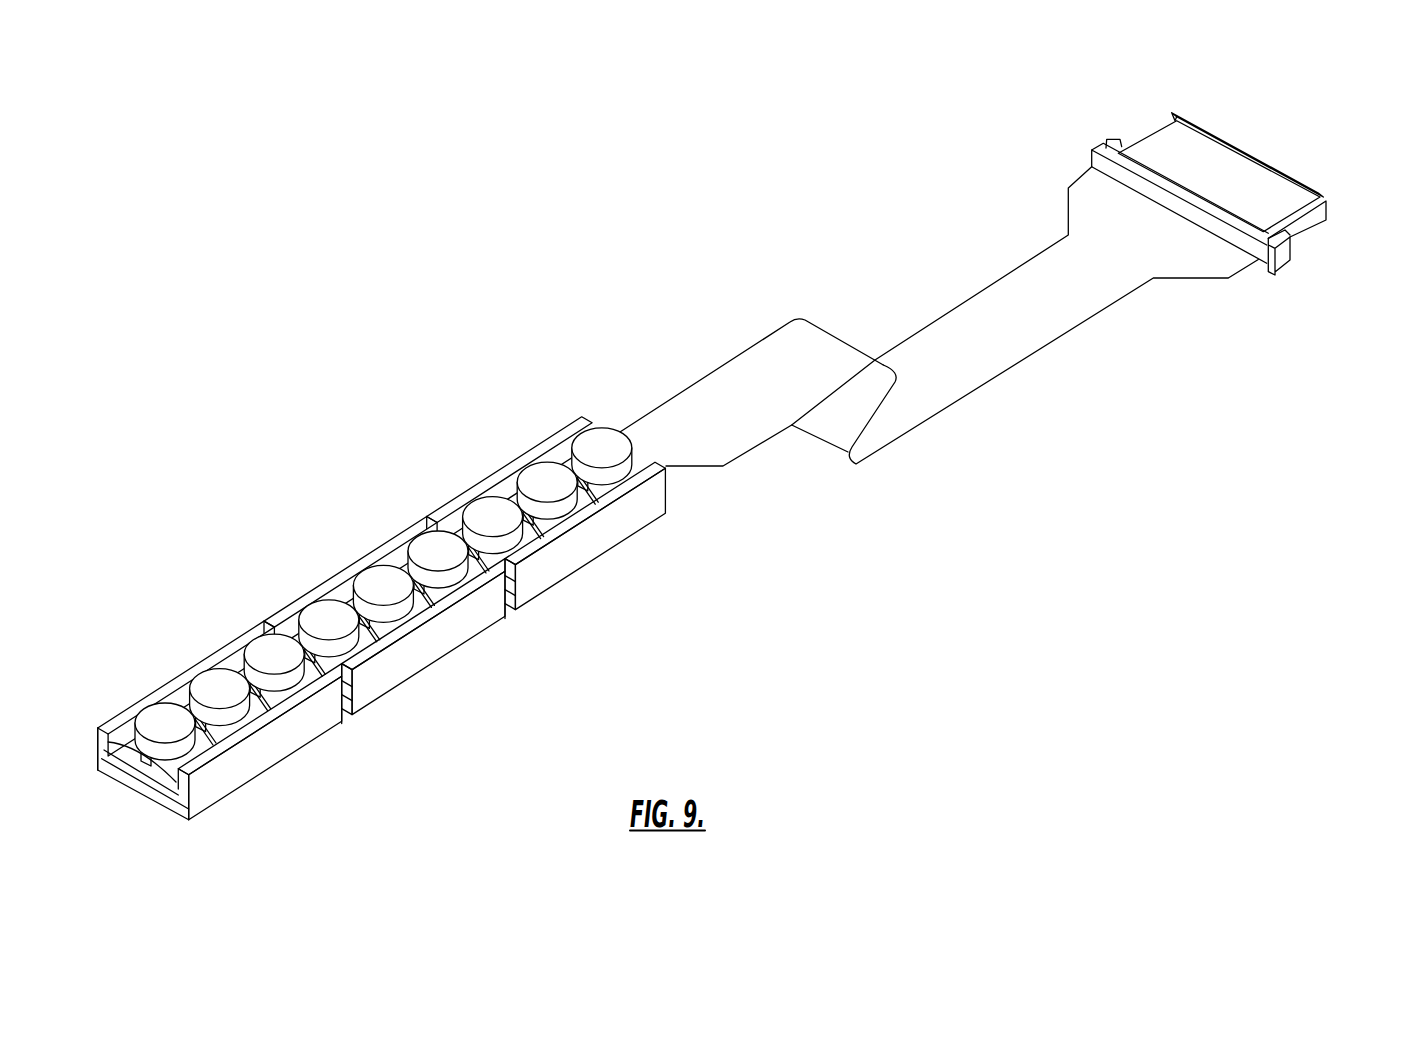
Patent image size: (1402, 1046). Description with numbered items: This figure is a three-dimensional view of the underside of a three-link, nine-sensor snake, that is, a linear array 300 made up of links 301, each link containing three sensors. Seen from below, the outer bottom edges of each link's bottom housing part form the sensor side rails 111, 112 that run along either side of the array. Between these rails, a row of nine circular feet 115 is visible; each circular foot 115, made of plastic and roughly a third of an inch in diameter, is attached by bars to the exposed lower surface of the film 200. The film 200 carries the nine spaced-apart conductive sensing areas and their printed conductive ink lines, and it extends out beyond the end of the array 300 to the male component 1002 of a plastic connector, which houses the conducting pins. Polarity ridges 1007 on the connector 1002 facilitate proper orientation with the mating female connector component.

The linear array 300 is at (513, 303).
The links 301 is at (470, 640).
The sensor side rail 111 is at (377, 547).
The sensor side rail 112 is at (430, 667).
The circular foot 115 is at (215, 680).
The film 200 is at (1003, 373).
The male component of connector 1002 is at (1244, 208).
The polarity ridges 1007 is at (1272, 282).